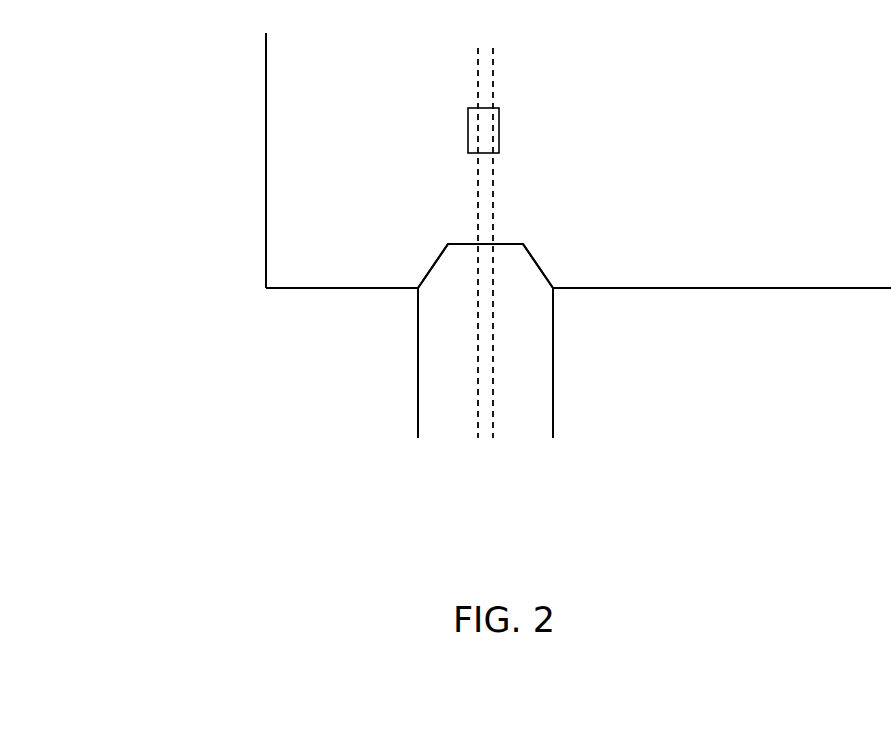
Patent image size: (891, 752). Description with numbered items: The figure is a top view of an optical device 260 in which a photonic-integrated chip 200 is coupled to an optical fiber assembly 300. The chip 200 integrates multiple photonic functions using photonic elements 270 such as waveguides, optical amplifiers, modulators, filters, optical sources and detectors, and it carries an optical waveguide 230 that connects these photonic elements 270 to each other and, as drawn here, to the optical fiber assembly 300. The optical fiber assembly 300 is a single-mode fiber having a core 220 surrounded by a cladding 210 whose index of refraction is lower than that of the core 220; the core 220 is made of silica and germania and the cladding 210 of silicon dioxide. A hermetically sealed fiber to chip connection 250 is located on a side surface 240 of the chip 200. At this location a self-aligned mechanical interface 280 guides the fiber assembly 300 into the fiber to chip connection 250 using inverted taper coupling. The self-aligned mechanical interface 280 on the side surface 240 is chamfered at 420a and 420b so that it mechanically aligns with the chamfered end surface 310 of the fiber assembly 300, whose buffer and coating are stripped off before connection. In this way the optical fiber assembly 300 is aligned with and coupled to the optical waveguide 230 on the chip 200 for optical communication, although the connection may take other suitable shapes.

The photonic-integrated chip 200 is at (578, 159).
The optical device 260 is at (205, 122).
The photonic elements 270 is at (470, 121).
The optical waveguide 230 is at (497, 181).
The fiber to chip connection 250 is at (462, 240).
The self-aligned mechanical interface 280 is at (522, 222).
The chamfer 420a is at (428, 257).
The chamfer 420b is at (540, 258).
The cladding 210 is at (447, 319).
The core 220 is at (477, 393).
The optical fiber assembly 300 is at (555, 408).
The chamfered end surface 310 is at (501, 246).
The side surface 240 is at (630, 292).